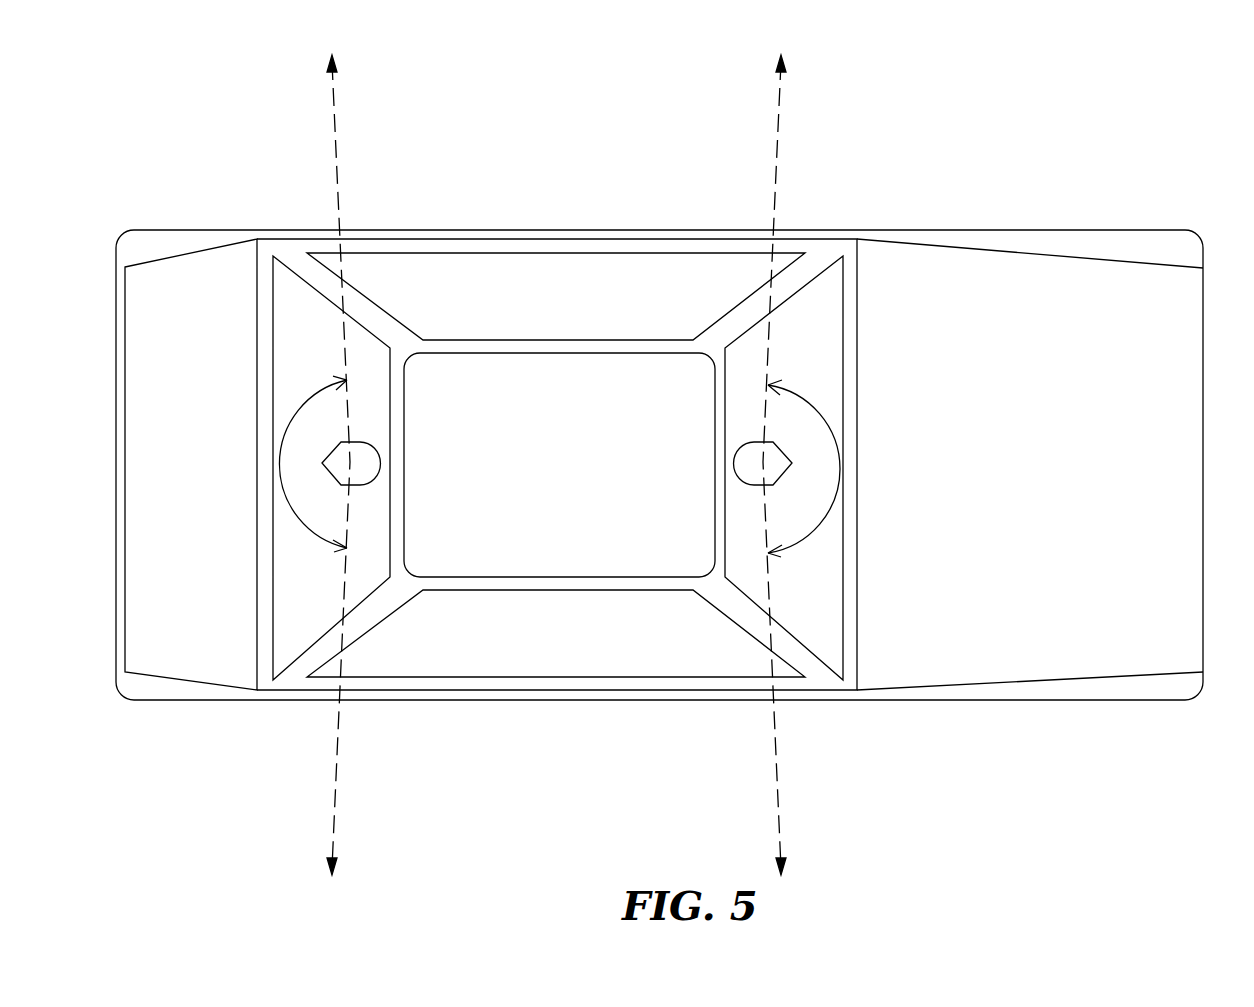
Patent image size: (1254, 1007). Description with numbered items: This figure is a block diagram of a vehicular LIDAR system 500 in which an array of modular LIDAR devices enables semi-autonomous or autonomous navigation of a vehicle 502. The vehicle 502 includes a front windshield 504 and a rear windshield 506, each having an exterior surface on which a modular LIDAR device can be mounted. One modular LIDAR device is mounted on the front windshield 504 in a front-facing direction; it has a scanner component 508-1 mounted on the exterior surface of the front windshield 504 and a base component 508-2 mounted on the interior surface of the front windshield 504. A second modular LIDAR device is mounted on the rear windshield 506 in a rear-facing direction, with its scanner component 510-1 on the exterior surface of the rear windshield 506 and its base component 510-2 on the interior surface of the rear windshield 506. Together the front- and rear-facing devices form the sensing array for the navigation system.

The electronic device 500 is at (1083, 184).
The vehicle 502 is at (1006, 474).
The front windshield 504 is at (819, 342).
The rear windshield 506 is at (327, 606).
The scanner component 508-1 is at (792, 463).
The base component 508-2 is at (735, 463).
The scanner component 510-1 is at (322, 463).
The base component 510-2 is at (380, 463).